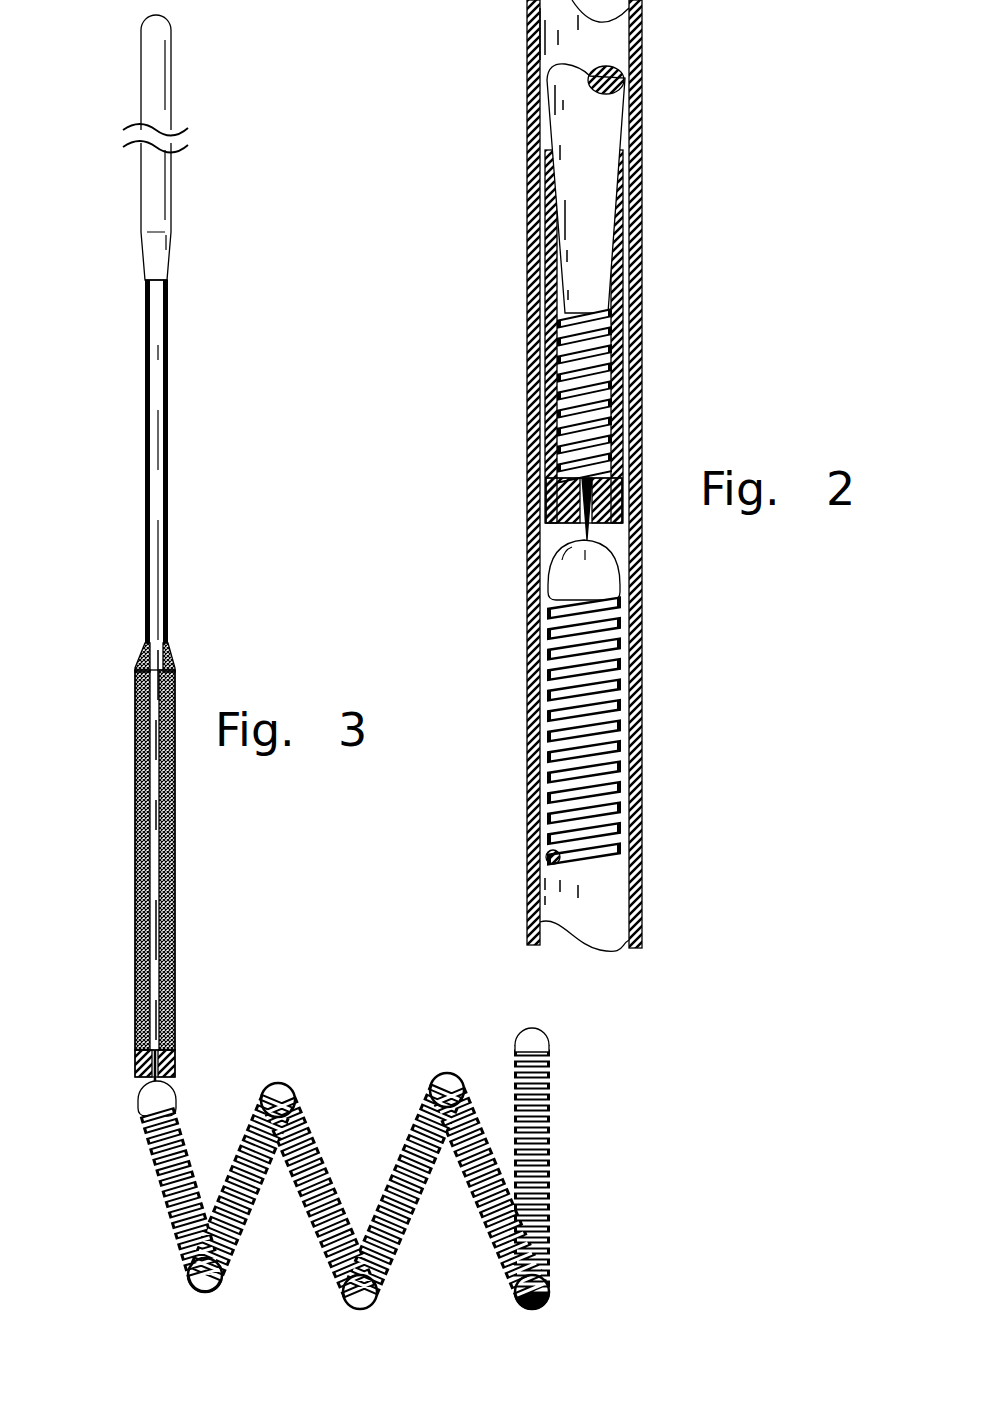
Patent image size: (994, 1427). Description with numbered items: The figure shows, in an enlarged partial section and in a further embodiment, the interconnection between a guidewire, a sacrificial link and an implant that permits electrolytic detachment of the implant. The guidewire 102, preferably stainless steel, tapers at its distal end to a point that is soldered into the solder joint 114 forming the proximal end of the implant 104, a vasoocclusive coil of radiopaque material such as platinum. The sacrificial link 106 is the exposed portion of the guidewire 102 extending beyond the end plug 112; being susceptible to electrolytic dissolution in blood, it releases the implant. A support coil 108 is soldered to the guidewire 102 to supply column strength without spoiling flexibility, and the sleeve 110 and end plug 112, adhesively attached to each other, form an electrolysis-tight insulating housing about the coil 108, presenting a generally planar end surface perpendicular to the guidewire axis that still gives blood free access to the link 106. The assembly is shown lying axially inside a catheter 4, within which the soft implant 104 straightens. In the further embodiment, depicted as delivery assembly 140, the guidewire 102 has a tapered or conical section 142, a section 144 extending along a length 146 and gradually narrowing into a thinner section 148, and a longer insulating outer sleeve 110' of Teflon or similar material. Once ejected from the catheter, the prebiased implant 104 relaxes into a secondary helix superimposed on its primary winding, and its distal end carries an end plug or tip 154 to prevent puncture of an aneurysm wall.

In FIG. 2, the catheter 4 is at (643, 830).
In FIG. 2, the guidewire 102 is at (607, 120).
In FIG. 3, the guidewire 102 is at (172, 527).
In FIG. 2, the implant 104 is at (614, 740).
In FIG. 3, the implant 104 is at (566, 1152).
In FIG. 2, the sacrificial link 106 is at (598, 545).
In FIG. 3, the sacrificial link 106 is at (160, 1085).
In FIG. 2, the coil 108 is at (612, 353).
In FIG. 2, the sleeve 110 is at (541, 336).
In FIG. 3, the outer sleeve 110' is at (203, 860).
In FIG. 2, the end plug 112 is at (562, 525).
In FIG. 3, the end plug 112 is at (136, 1050).
In FIG. 2, the solder joint 114 is at (568, 572).
In FIG. 3, the solder joint 114 is at (148, 1102).
In FIG. 3, the delivery assembly 140 is at (226, 167).
In FIG. 3, the tapered section 142 is at (172, 250).
In FIG. 3, the section 144 is at (168, 427).
In FIG. 3, the length 146 is at (111, 280).
In FIG. 3, the thinner section 148 is at (176, 877).
In FIG. 3, the end plug or tip 154 is at (548, 1027).